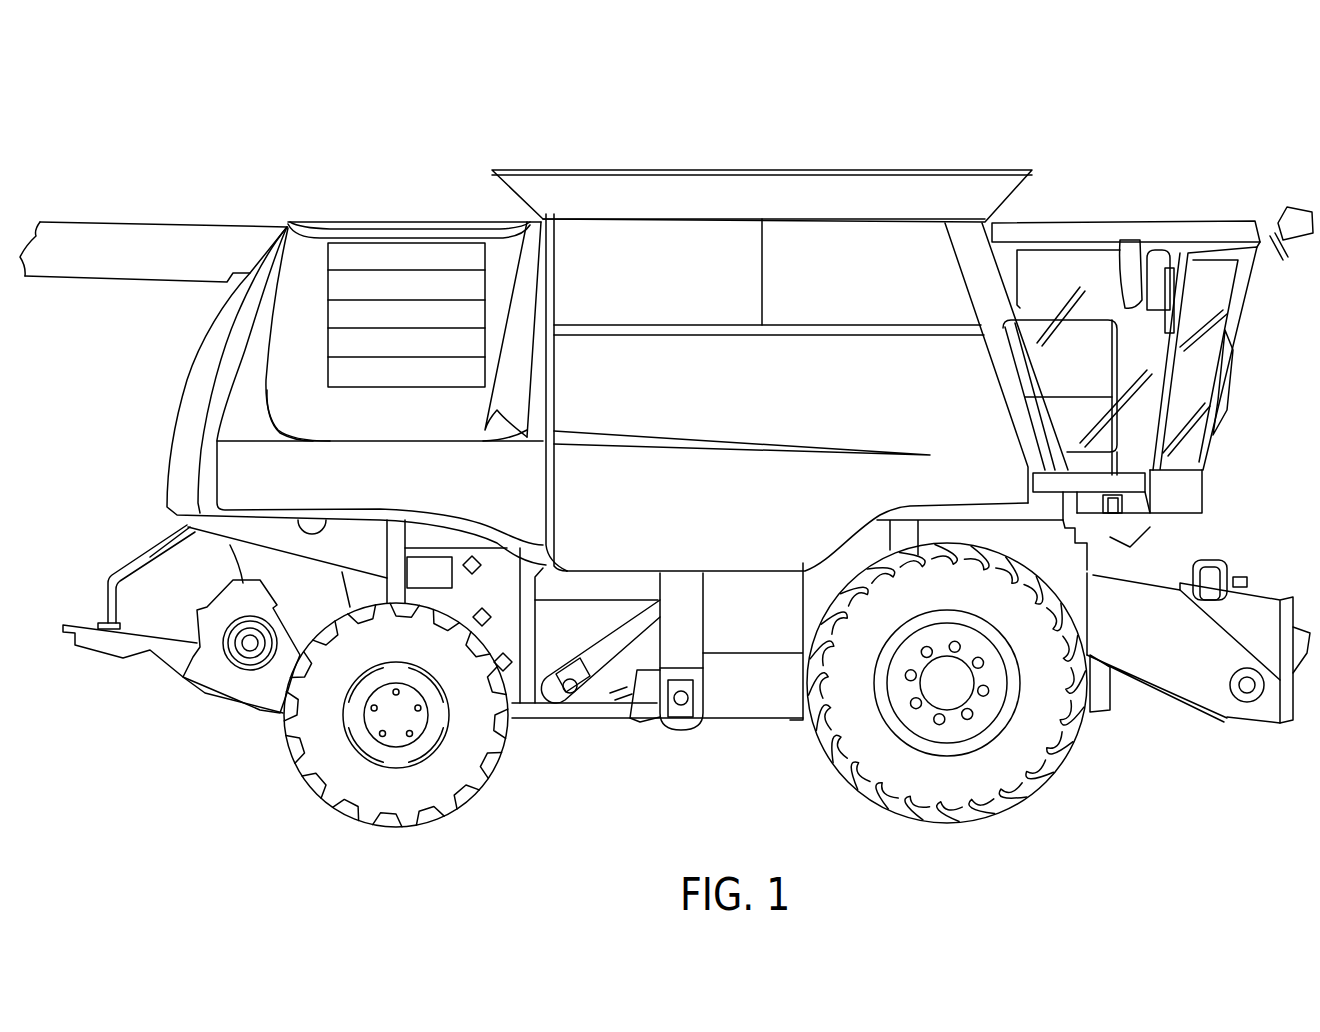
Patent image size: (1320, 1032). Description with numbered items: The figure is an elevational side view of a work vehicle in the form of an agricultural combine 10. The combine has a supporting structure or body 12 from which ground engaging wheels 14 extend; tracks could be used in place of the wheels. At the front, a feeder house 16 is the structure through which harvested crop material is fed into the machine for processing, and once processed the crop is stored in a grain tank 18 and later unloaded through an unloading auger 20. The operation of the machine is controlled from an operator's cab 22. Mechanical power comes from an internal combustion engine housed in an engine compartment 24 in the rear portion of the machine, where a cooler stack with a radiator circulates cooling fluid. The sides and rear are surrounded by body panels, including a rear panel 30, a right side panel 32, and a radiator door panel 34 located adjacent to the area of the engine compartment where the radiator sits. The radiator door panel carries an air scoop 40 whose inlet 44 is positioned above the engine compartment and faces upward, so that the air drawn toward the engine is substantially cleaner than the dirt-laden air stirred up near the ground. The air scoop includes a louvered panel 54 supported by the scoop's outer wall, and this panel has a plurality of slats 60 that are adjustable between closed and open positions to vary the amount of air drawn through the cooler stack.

The agricultural combine 10 is at (708, 120).
The body 12 is at (745, 703).
The ground engaging wheels 14 is at (490, 770).
The feeder house 16 is at (1185, 680).
The grain tank 18 is at (903, 190).
The unloading auger 20 is at (128, 242).
The operator's cab 22 is at (1091, 372).
The engine compartment 24 is at (538, 216).
The rear panel 30 is at (193, 383).
The right side panel 32 is at (888, 408).
The radiator door panel 34 is at (268, 250).
The air scoop 40 is at (361, 341).
The inlet 44 is at (417, 226).
The louvered panel 54 is at (292, 291).
The slats 60 is at (385, 247).